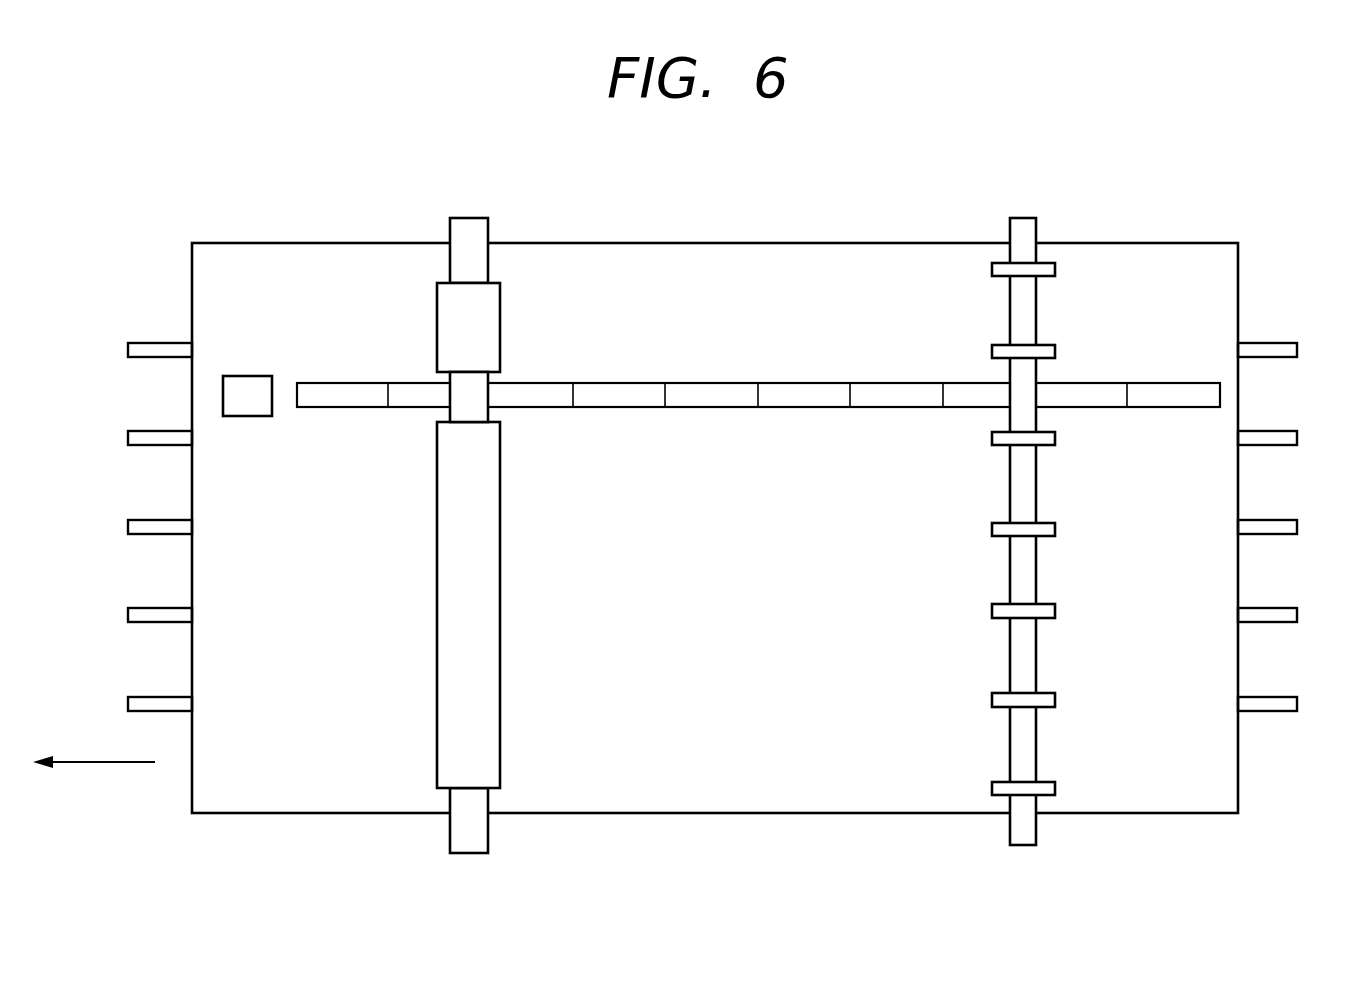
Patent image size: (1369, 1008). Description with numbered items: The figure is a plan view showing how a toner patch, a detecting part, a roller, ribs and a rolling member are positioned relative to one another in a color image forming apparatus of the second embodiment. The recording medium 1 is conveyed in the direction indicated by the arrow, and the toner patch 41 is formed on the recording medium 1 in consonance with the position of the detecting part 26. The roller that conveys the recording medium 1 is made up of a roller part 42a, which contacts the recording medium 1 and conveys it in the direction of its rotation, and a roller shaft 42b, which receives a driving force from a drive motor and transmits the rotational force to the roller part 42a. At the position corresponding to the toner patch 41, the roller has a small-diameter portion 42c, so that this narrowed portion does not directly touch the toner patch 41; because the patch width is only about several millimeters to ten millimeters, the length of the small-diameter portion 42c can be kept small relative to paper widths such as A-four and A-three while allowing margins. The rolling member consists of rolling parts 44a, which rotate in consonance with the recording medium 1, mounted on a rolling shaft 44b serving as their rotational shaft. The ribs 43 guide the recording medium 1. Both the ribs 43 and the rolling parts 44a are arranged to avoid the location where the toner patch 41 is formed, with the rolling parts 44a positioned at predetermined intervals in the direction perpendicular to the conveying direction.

The recording medium 1 is at (1172, 813).
The detecting part 26 is at (253, 375).
The toner patch 41 is at (1170, 383).
The roller part 42a is at (455, 319).
The roller shaft 42b is at (473, 216).
The small-diameter portion 42c is at (470, 395).
The rib 43 is at (1299, 352).
The rolling part 44a is at (1056, 266).
The rolling shaft 44b is at (1023, 216).